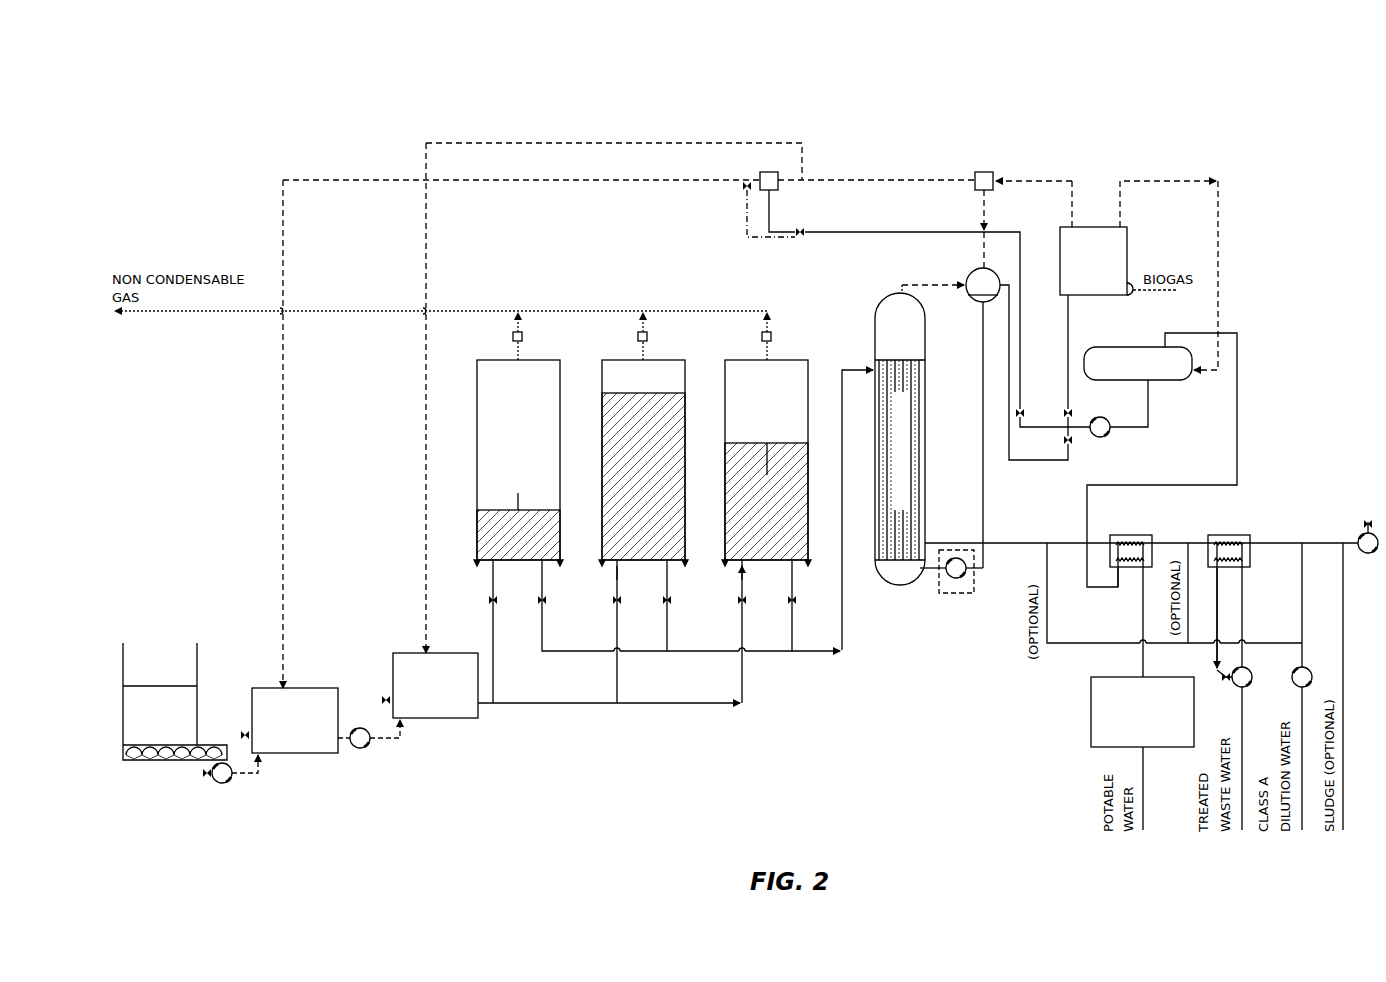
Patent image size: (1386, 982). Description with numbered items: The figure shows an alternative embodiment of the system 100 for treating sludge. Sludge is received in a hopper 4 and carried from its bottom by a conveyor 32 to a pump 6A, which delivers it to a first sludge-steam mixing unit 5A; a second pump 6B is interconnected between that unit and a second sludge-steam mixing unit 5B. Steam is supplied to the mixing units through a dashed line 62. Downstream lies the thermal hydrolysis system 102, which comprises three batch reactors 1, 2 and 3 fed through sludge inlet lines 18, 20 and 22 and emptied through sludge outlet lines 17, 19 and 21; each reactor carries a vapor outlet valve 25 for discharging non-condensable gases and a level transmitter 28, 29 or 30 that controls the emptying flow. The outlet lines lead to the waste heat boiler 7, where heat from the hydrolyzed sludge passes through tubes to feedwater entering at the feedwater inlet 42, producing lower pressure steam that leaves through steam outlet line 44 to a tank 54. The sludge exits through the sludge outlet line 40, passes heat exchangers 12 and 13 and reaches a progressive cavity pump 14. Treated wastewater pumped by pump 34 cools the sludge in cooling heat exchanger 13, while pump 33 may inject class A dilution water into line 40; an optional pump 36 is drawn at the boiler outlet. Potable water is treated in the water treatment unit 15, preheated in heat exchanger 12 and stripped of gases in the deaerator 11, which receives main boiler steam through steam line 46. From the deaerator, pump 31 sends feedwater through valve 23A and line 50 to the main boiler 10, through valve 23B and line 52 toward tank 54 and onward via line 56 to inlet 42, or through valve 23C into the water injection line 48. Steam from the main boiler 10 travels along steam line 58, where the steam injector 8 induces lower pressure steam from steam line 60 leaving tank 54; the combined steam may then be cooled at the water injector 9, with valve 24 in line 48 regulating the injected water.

The system for treating sludge 100 is at (282, 111).
The thermal hydrolysis system 102 is at (589, 280).
The steam supply line 62 is at (706, 143).
The water injector 9 is at (762, 173).
The steam injector 8 is at (1000, 162).
The steam line 58 is at (1060, 180).
The valve 24 is at (796, 243).
The water injection line 48 is at (870, 232).
The lower pressure steam line 60 is at (984, 256).
The tank 54 is at (993, 270).
The steam outlet line 44 is at (936, 285).
The waste heat boiler 7 is at (883, 471).
The main boiler 10 is at (1093, 261).
The steam line 46 is at (1218, 296).
The line 50 is at (1068, 326).
The deaerator 11 is at (1138, 354).
The valve 23A is at (1051, 415).
The valve 23B is at (1051, 442).
The valve 23C is at (1022, 408).
The pump 31 is at (1065, 418).
The line 52 is at (1034, 465).
The line 56 is at (983, 416).
The feedwater inlet 42 is at (922, 571).
The optional pump 36 is at (957, 594).
The heat exchanger 12 is at (1142, 597).
The cooling heat exchanger 13 is at (1239, 593).
The sludge outlet line 40 is at (1290, 543).
The pump 14 is at (1368, 547).
The water treatment unit 15 is at (1142, 753).
The pump 34 is at (1241, 699).
The pump 33 is at (1308, 686).
The vapor outlet valve 25 is at (629, 336).
The batch reactor 3 is at (518, 460).
The batch reactor 2 is at (643, 460).
The batch reactor 1 is at (766, 460).
The level transmitter 30 is at (518, 573).
The level transmitter 29 is at (644, 573).
The level transmitter 28 is at (768, 573).
The sludge inlet line 22 is at (479, 600).
The sludge outlet line 21 is at (531, 600).
The sludge inlet line 20 is at (605, 600).
The sludge outlet line 19 is at (655, 600).
The sludge inlet line 18 is at (731, 600).
The sludge outlet line 17 is at (781, 600).
The hopper 4 is at (175, 701).
The conveyor 32 is at (167, 773).
The pump 6A is at (230, 779).
The pump 6B is at (369, 744).
The sludge-steam mixing unit 5A is at (289, 711).
The sludge-steam mixing unit 5B is at (430, 677).